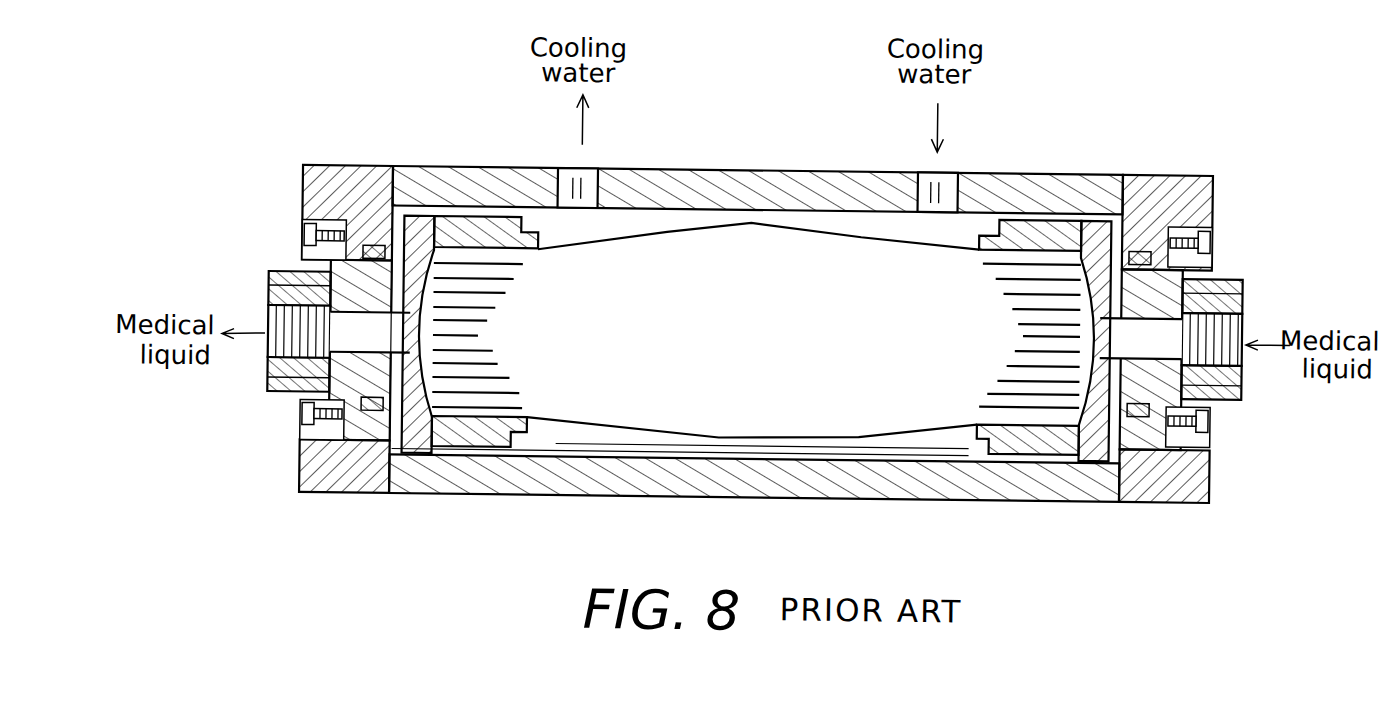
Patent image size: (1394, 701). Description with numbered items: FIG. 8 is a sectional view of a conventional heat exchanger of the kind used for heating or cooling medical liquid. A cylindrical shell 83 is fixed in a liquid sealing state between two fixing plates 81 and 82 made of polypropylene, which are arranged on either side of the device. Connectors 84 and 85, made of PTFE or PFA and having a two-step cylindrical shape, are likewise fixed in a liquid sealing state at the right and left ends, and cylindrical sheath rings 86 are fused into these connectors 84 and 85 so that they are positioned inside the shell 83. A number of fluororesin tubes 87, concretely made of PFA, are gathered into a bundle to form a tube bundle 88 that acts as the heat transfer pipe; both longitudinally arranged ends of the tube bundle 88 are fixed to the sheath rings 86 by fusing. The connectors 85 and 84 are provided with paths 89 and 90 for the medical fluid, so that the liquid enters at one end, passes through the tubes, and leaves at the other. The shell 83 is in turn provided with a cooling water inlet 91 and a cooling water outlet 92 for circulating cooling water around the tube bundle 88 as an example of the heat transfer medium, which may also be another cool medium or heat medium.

The fixing plate 81 is at (340, 170).
The fixing plate 82 is at (1157, 170).
The cylindrical shell 83 is at (811, 170).
The connector 84 is at (427, 498).
The connector 85 is at (1088, 458).
The sheath ring 86 is at (536, 430).
The fluororesin tube 87 is at (490, 381).
The tube bundle 88 is at (670, 220).
The path for medical fluid 89 is at (1176, 346).
The path for medical fluid 90 is at (396, 349).
The cooling water inlet 91 is at (945, 170).
The cooling water outlet 92 is at (565, 170).